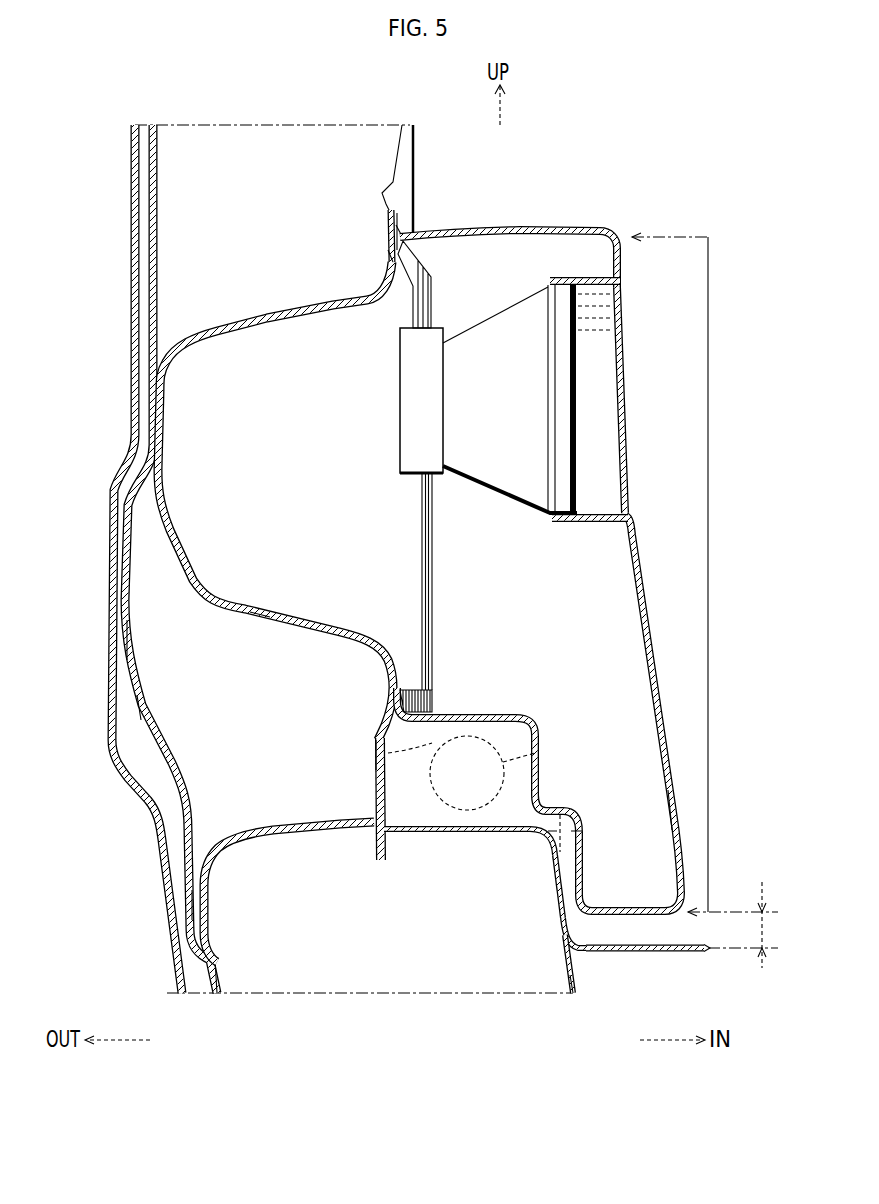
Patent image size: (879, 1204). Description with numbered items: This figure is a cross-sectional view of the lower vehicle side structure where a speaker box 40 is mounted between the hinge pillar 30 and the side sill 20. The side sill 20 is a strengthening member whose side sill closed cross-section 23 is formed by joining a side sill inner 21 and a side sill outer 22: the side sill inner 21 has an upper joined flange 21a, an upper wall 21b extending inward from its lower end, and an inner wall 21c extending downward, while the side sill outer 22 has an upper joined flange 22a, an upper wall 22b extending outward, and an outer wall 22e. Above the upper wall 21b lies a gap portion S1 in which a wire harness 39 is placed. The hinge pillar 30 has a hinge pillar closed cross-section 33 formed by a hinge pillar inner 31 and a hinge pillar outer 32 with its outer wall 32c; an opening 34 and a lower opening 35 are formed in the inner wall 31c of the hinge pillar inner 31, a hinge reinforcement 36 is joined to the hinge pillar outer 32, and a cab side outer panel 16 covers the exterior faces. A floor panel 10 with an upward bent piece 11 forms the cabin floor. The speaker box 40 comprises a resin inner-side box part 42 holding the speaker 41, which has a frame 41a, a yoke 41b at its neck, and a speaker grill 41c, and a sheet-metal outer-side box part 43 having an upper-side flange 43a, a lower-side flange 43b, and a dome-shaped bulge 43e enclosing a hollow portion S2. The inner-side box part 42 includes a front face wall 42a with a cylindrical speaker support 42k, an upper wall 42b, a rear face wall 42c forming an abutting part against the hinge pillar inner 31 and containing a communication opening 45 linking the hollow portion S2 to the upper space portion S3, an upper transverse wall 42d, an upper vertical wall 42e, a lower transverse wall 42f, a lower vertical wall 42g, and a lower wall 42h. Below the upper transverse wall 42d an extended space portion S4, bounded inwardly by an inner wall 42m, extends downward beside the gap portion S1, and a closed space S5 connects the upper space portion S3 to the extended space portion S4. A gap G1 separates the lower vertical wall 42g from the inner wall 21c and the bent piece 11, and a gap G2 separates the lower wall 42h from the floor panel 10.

The floor panel 10 is at (690, 955).
The bent piece 11 is at (556, 880).
The cab side outer panel 16 is at (142, 270).
The side sill 20 is at (582, 983).
The side sill inner 21 is at (578, 965).
The upper joined flange 21a is at (432, 744).
The upper wall 21b is at (438, 836).
The inner wall 21c is at (560, 935).
The side sill outer 22 is at (214, 982).
The upper joined flange 22a is at (374, 755).
The upper wall 22b is at (286, 827).
The outer side wall 22e is at (208, 905).
The side sill closed cross-section 23 is at (338, 952).
The hinge pillar 30 is at (419, 143).
The hinge pillar inner 31 is at (386, 215).
The inner wall 31c is at (386, 238).
The hinge pillar outer 32 is at (161, 225).
The outer wall 32c is at (130, 640).
The hinge pillar closed cross-section 33 is at (250, 210).
The opening 34 is at (391, 195).
The opening 35 is at (387, 253).
The hinge reinforcement 36 is at (136, 708).
The wire harness 39 is at (545, 757).
The speaker box 40 is at (587, 535).
The speaker 41 is at (492, 496).
The frame 41a is at (493, 340).
The yoke 41b is at (412, 402).
The speaker grill 41c is at (578, 384).
The inner-side box part 42 is at (649, 619).
The front face wall 42a is at (633, 543).
The upper wall 42b is at (498, 231).
The rear face wall 42c is at (433, 298).
The upper transverse wall 42d is at (478, 712).
The upper vertical wall 42e is at (541, 767).
The lower transverse wall 42f is at (574, 806).
The lower vertical wall 42g is at (590, 856).
The lower wall 42h is at (619, 906).
The speaker support 42k is at (621, 295).
The inner wall 42m is at (674, 814).
The outer-side box part 43 is at (219, 321).
The upper-side flange 43a is at (403, 228).
The lower-side flange 43b is at (374, 843).
The bulge 43e is at (258, 616).
The communication opening 45 is at (421, 565).
The gap portion S1 is at (501, 741).
The hollow portion S2 is at (228, 452).
The upper space portion S3 is at (672, 713).
The extended space portion S4 is at (672, 727).
The closed space S5 is at (752, 672).
The gap G1 is at (562, 823).
The gap G2 is at (766, 920).